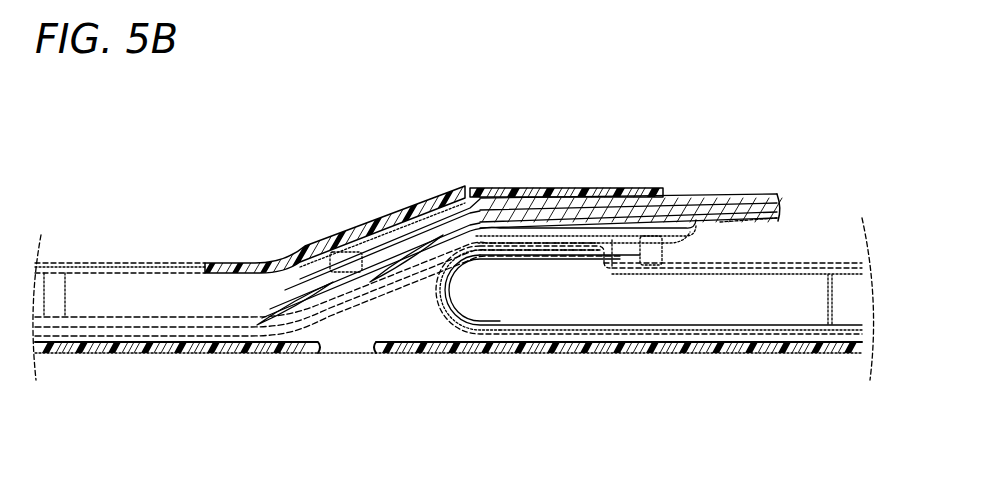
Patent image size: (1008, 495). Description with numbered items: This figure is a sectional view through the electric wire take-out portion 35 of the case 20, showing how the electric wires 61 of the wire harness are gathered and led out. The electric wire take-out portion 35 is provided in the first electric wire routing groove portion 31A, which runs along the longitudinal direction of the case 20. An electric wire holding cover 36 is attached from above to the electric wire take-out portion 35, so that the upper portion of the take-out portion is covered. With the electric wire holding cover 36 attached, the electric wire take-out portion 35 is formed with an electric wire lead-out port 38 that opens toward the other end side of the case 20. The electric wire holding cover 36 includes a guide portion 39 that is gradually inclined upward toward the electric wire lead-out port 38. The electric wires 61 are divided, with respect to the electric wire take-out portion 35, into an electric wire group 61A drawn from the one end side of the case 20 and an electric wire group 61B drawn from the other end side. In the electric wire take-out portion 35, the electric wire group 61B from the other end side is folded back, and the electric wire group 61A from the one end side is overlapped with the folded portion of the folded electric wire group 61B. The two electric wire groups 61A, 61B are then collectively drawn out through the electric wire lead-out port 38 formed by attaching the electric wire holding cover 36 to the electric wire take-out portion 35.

The first electric wire routing groove portion 31A is at (125, 292).
The electric wire group 61A is at (167, 317).
The guide portion 39 is at (390, 215).
The electric wire holding cover 36 is at (555, 178).
The electric wire lead-out port 38 is at (698, 243).
The electric wires 61 is at (743, 190).
The electric wire take-out portion 35 is at (517, 296).
The electric wire group 61B is at (697, 332).
The case 20 is at (246, 368).